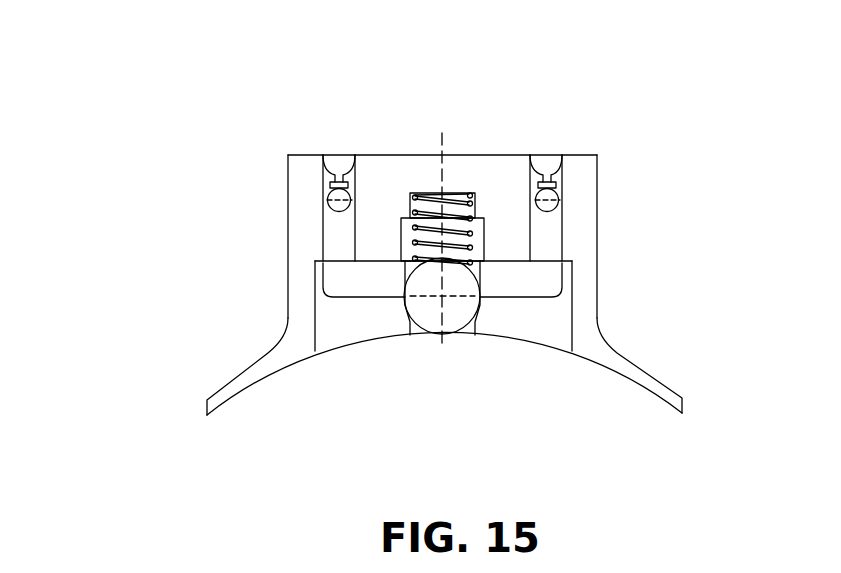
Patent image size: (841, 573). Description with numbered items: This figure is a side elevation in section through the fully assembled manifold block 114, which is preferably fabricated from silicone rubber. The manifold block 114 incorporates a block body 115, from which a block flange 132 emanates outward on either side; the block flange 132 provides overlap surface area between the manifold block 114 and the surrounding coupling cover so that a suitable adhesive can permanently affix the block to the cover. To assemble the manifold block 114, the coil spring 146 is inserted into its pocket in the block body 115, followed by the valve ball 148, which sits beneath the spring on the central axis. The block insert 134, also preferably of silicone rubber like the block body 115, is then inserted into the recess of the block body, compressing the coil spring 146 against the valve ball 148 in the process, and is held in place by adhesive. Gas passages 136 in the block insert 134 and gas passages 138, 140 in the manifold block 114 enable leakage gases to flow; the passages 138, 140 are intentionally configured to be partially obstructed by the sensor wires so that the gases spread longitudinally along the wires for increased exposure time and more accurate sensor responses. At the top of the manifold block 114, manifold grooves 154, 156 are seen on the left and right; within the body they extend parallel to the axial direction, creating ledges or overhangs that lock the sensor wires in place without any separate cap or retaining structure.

The manifold block 114 is at (240, 137).
The block body 115 is at (385, 175).
The block flange 132 is at (226, 386).
The block insert 134 is at (336, 333).
The gas passages 136 is at (347, 275).
The gas passage 138 is at (337, 237).
The gas passage 140 is at (552, 238).
The coil spring 146 is at (457, 193).
The valve ball 148 is at (452, 335).
The manifold groove 154 is at (345, 136).
The manifold groove 156 is at (540, 147).